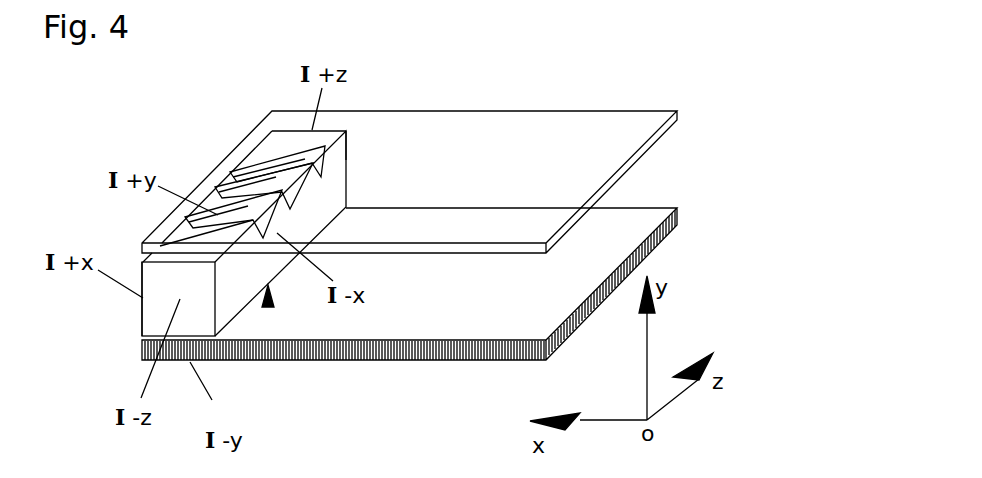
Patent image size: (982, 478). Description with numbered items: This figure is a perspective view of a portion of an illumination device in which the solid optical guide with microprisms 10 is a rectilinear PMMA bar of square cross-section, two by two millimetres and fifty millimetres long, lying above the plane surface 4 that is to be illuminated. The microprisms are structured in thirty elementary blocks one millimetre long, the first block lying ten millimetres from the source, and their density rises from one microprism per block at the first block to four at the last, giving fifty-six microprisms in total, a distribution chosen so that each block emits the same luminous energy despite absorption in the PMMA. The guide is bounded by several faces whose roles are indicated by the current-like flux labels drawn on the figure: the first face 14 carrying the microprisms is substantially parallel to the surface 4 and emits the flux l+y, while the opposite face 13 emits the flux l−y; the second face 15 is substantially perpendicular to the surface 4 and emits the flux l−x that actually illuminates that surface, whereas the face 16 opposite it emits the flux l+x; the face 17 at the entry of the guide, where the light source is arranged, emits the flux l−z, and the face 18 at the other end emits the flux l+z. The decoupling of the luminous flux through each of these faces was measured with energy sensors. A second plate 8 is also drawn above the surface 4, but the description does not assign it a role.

The plane surface 4 is at (643, 223).
The cover plate 8 is at (643, 127).
The solid optical guide with microprisms 10 is at (245, 209).
The face opposite face 14 13 is at (268, 306).
The first face 14 is at (273, 150).
The second face 15 is at (337, 189).
The face opposite face 15 16 is at (143, 277).
The face at the entry of the guide 17 is at (153, 310).
The face at the other end of the guide 18 is at (347, 159).